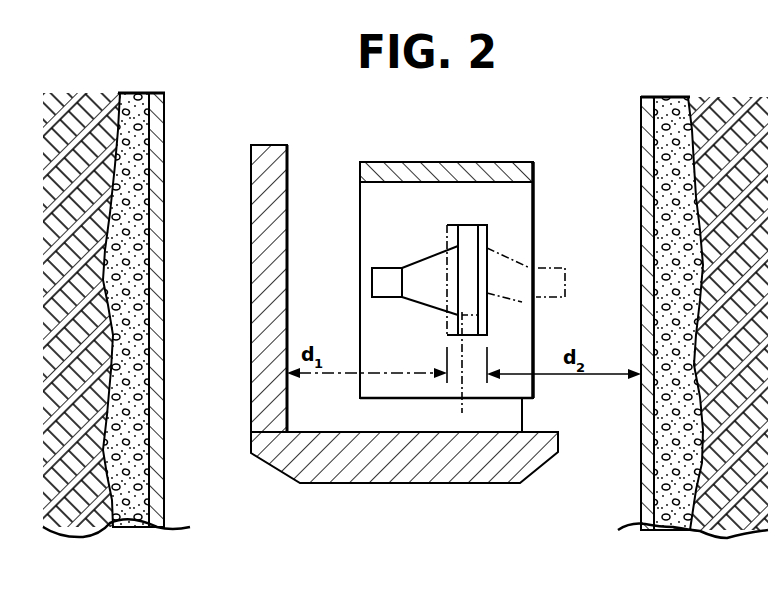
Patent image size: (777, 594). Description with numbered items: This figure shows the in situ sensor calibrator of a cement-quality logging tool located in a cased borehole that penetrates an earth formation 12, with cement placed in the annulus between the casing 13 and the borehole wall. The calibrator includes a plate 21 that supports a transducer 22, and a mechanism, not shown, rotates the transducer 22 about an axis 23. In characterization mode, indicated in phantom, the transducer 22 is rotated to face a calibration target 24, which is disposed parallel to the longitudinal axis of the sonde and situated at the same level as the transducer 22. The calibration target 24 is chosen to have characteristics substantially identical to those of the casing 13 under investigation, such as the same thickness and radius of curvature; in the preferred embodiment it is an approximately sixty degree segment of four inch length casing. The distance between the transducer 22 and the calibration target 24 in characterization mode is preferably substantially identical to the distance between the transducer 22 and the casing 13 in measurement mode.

The earth formation 12 is at (705, 486).
The casing 13 is at (641, 455).
The plate 21 is at (385, 177).
The transducer 22 is at (487, 296).
The axis 23 is at (460, 404).
The calibration target 24 is at (250, 300).